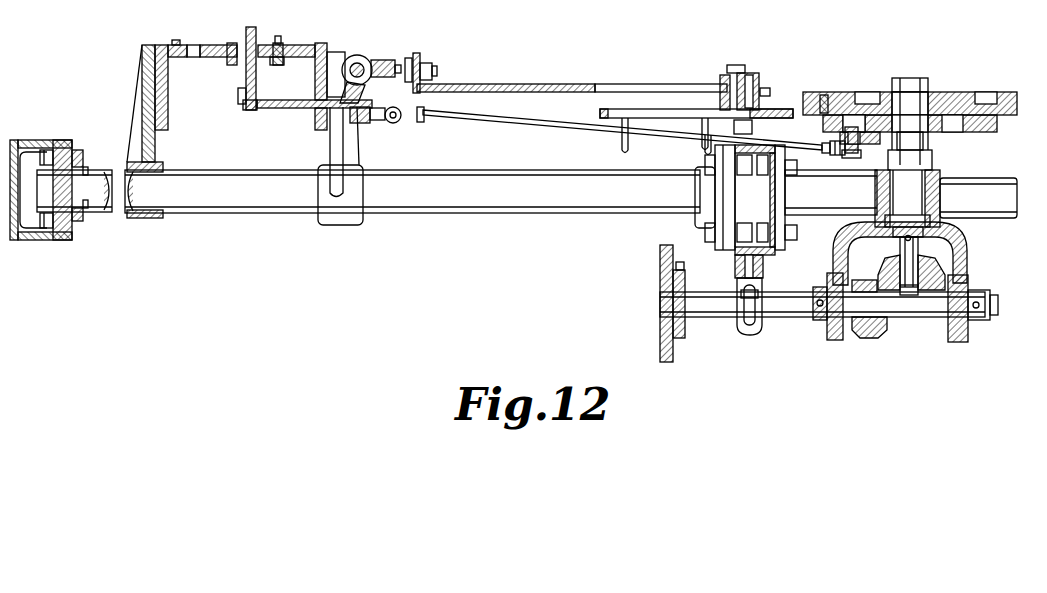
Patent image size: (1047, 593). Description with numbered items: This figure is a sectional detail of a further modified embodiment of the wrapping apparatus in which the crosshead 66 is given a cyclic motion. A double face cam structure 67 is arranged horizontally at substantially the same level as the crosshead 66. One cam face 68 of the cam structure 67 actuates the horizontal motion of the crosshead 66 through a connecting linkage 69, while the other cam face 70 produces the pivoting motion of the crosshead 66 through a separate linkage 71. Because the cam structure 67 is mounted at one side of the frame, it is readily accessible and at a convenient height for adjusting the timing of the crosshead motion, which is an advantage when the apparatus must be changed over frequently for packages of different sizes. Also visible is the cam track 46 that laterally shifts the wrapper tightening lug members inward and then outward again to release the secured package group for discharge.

The cam track 46 is at (230, 43).
The crosshead 66 is at (292, 108).
The double face cam structure 67 is at (958, 88).
The cam face 68 is at (830, 92).
The connecting linkage 69 is at (621, 82).
The cam face 70 is at (976, 130).
The linkage 71 is at (490, 128).